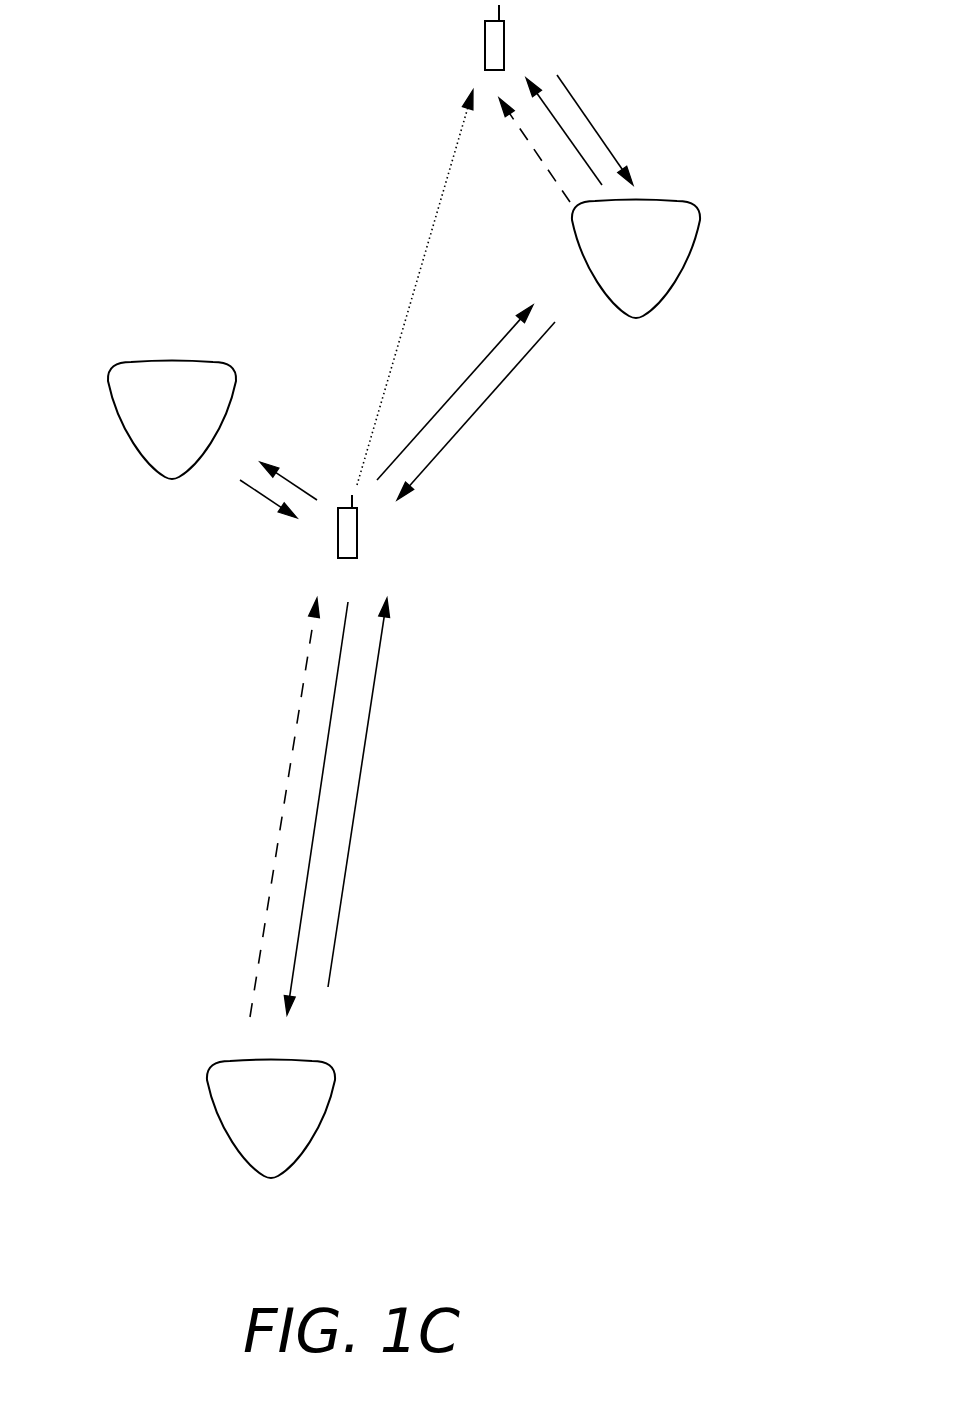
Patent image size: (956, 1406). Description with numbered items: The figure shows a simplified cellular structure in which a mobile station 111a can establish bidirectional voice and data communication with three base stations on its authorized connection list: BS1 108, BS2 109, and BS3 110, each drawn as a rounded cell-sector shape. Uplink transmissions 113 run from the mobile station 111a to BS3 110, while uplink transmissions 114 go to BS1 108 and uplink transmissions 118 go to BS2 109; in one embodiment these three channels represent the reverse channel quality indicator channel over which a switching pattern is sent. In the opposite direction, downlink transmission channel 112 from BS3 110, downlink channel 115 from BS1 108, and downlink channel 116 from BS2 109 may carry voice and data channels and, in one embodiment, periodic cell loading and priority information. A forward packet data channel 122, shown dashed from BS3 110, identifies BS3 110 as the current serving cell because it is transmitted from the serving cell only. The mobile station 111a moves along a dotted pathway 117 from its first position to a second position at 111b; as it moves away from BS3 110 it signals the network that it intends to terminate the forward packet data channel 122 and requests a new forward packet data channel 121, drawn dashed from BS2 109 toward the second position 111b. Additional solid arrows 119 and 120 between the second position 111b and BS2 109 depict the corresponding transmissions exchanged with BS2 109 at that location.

The base station BS1 108 is at (145, 463).
The base station BS2 109 is at (657, 305).
The base station BS3 110 is at (237, 1152).
The mobile station 111a is at (357, 518).
The mobile station at second position 111b is at (485, 30).
The downlink transmission channel from BS3 112 is at (358, 788).
The uplink transmissions to BS3 113 is at (292, 987).
The uplink transmissions to BS1 114 is at (288, 477).
The downlink transmission channel from BS1 115 is at (263, 493).
The downlink transmission channel from BS2 116 is at (515, 370).
The pathway 117 is at (420, 270).
The uplink transmissions to BS2 118 is at (488, 352).
The signal from mobile station 111b to BS2 119 is at (595, 127).
The signal from BS2 to mobile station 111b 120 is at (540, 90).
The new forward packet data channel 121 is at (542, 168).
The forward packet data channel 122 is at (287, 788).